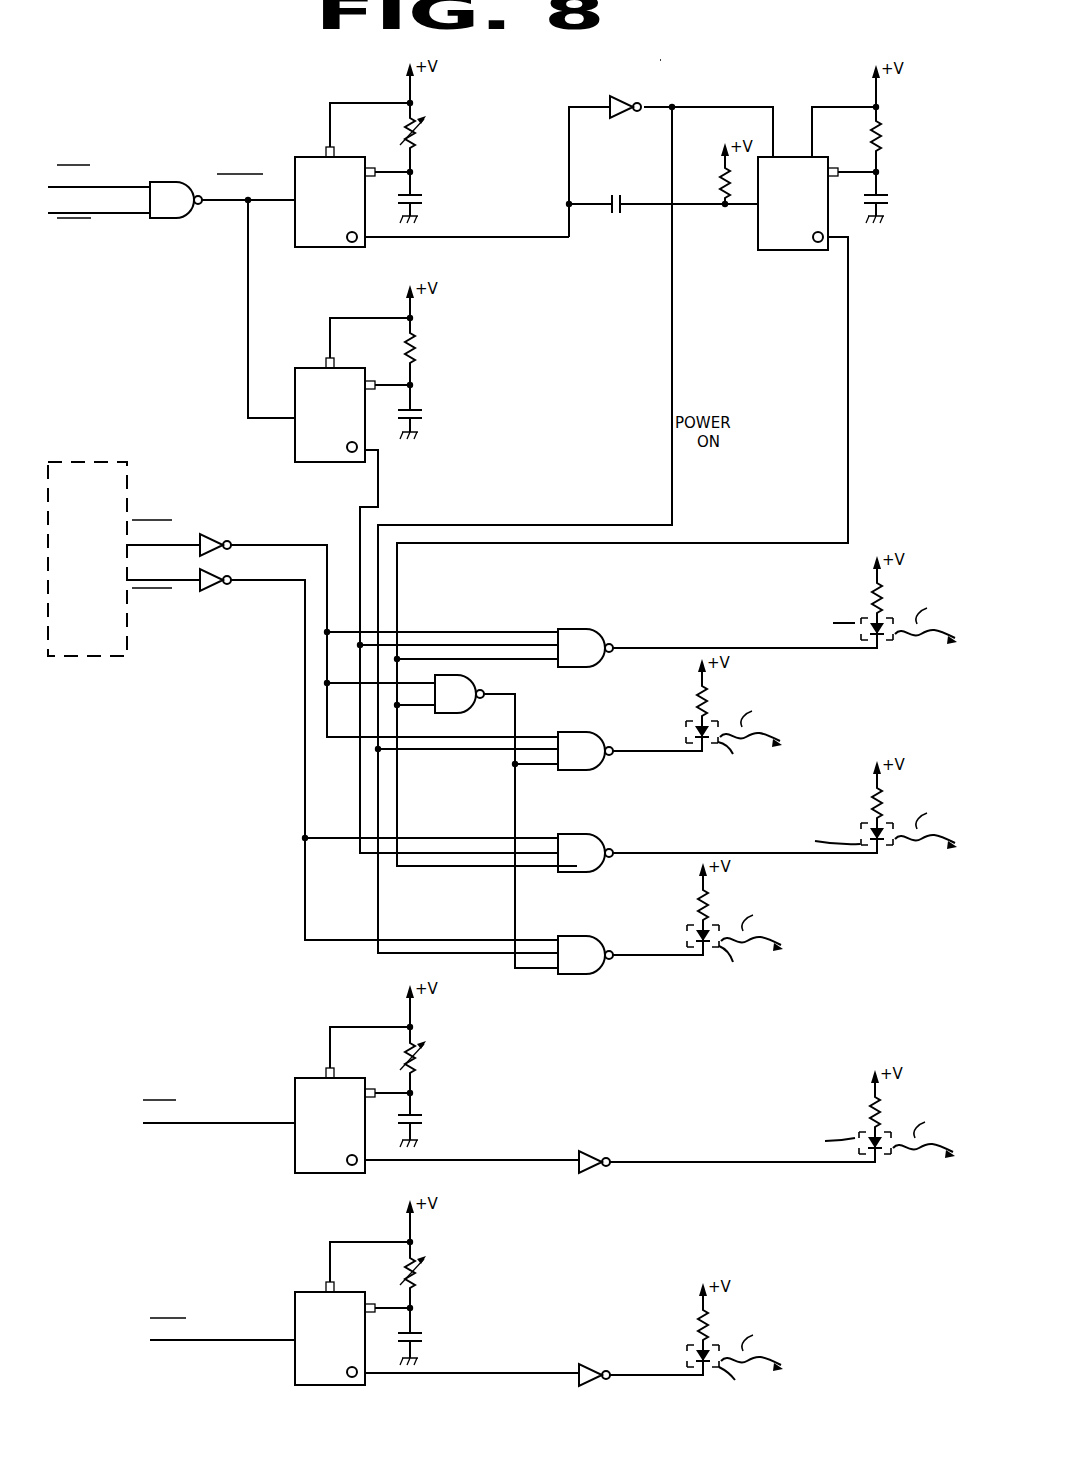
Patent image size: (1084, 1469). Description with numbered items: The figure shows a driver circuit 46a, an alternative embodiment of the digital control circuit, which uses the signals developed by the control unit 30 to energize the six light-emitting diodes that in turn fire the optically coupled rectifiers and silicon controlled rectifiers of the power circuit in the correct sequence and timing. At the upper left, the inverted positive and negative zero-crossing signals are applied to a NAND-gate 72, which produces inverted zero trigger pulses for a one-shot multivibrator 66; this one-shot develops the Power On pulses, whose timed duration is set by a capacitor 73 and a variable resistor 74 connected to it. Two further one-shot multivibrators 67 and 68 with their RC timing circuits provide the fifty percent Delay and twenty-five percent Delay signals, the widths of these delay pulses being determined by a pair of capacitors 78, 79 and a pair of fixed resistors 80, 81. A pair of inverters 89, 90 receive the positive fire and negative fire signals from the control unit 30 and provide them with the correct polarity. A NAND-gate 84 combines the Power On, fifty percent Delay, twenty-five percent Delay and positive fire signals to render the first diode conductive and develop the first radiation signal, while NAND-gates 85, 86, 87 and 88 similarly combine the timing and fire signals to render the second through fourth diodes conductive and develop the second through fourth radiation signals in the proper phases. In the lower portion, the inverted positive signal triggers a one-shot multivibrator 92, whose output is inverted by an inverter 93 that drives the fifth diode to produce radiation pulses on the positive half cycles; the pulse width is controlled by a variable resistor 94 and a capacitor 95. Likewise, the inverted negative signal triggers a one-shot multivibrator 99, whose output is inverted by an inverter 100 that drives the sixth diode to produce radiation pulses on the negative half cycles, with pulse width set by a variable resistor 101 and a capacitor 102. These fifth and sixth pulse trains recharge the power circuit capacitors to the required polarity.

The driver circuit 46a is at (664, 60).
The NAND-gate 72 is at (160, 220).
The one-shot multivibrator 66 is at (333, 244).
The variable resistor 74 is at (424, 146).
The capacitor 73 is at (424, 208).
The one-shot multivibrator 67 is at (790, 250).
The fixed resistor 80 is at (884, 133).
The capacitor 78 is at (880, 197).
The one-shot multivibrator 68 is at (295, 440).
The fixed resistor 81 is at (422, 348).
The capacitor 79 is at (424, 422).
The control unit 30 is at (88, 462).
The inverter 89 is at (206, 534).
The inverter 90 is at (205, 590).
The NAND-gate 84 is at (602, 608).
The NAND-gate 85 is at (497, 682).
The NAND-gate 86 is at (600, 768).
The NAND-gate 87 is at (603, 835).
The NAND-gate 88 is at (588, 936).
The one-shot multivibrator 92 is at (295, 1153).
The variable resistor 94 is at (424, 1070).
The capacitor 95 is at (425, 1113).
The inverter 93 is at (585, 1150).
The one-shot multivibrator 99 is at (295, 1365).
The variable resistor 101 is at (424, 1284).
The capacitor 102 is at (424, 1328).
The inverter 100 is at (598, 1347).